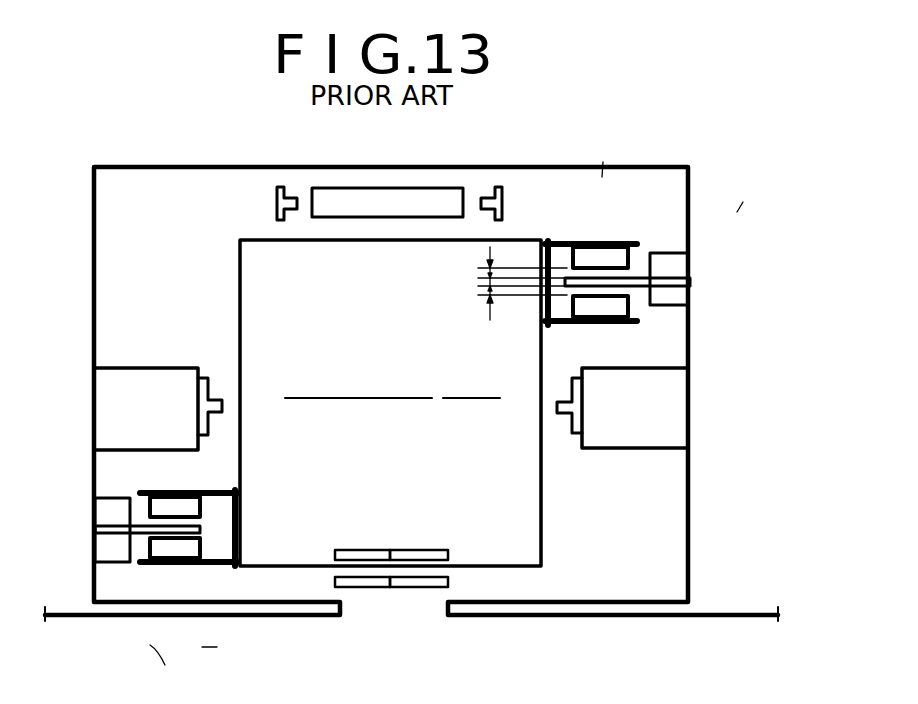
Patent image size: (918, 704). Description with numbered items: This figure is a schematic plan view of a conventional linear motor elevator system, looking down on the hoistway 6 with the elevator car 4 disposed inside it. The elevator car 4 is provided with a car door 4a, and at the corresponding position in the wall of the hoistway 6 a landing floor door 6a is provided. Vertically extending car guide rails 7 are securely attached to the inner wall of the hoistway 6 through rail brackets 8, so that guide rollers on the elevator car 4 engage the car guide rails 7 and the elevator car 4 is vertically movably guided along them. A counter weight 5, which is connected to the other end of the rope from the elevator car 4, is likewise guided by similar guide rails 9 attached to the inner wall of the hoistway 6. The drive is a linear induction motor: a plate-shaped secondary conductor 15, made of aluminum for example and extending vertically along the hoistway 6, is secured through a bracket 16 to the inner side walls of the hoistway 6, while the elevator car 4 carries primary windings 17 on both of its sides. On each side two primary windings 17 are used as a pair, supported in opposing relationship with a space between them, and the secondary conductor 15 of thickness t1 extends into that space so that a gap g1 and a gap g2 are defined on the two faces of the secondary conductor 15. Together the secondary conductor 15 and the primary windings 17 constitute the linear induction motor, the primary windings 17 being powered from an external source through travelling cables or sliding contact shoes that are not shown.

The elevator car 4 is at (243, 240).
The car door 4a is at (343, 550).
The counter weight 5 is at (430, 188).
The hoistway 6 is at (130, 169).
The landing floor door 6a is at (403, 587).
The car guide rails 7 is at (567, 433).
The rail brackets 8 is at (628, 450).
The guide rails 9 is at (502, 185).
The secondary conductor 15 is at (690, 282).
The bracket 16 is at (680, 250).
The primary windings 17 is at (600, 238).
The gap g1 is at (485, 273).
The thickness t1 is at (485, 283).
The gap g2 is at (485, 293).